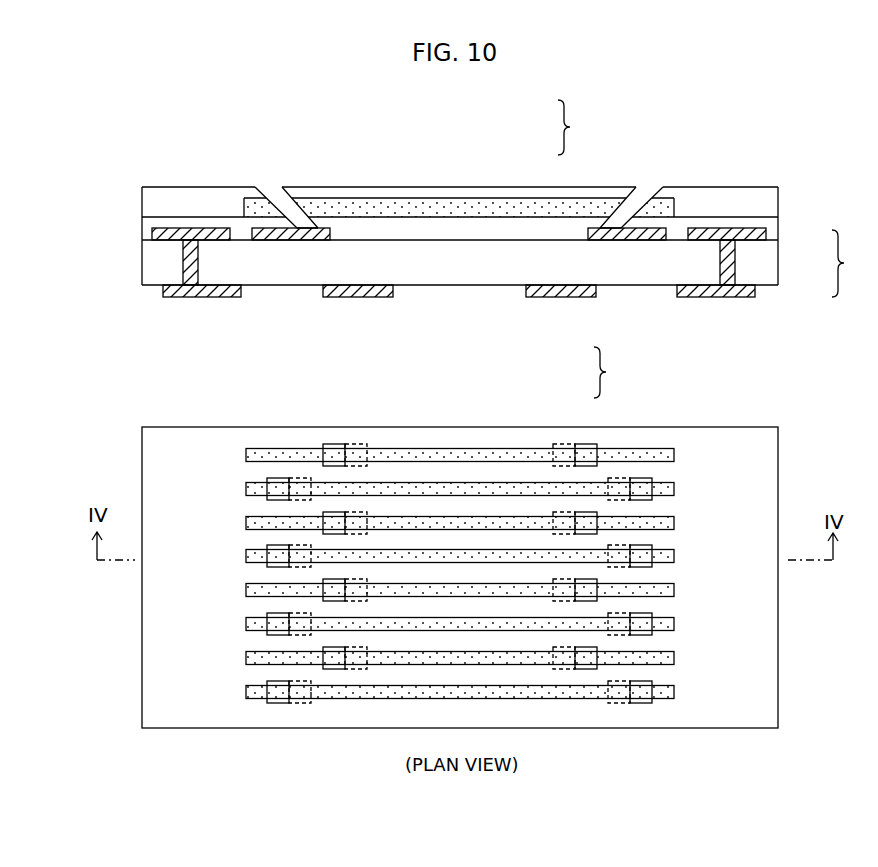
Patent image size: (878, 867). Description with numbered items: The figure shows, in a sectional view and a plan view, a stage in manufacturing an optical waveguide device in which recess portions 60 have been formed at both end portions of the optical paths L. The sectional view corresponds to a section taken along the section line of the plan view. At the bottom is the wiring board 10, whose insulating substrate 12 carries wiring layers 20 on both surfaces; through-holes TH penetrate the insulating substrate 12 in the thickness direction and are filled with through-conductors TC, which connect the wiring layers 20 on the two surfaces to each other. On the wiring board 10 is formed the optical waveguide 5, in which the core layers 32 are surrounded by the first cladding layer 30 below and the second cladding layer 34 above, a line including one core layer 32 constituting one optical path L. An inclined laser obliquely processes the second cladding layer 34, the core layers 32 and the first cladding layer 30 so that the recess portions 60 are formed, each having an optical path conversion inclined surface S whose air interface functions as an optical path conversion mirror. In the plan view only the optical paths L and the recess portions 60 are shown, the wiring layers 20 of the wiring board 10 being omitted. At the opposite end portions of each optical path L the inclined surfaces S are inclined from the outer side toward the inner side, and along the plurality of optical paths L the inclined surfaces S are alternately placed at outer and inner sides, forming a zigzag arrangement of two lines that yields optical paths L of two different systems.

The optical waveguide 5 is at (591, 249).
The wiring board 10 is at (778, 662).
The insulating substrate 12 is at (764, 273).
The wiring layer 20 is at (758, 233).
The first cladding layer 30 is at (472, 226).
The core layer 32 is at (462, 208).
The second cladding layer 34 is at (448, 193).
The recess portion 60 is at (640, 200).
The optical path conversion inclined surface S is at (613, 207).
The through-hole TH is at (734, 258).
The through-conductor TC is at (725, 270).
The optical path L is at (686, 560).